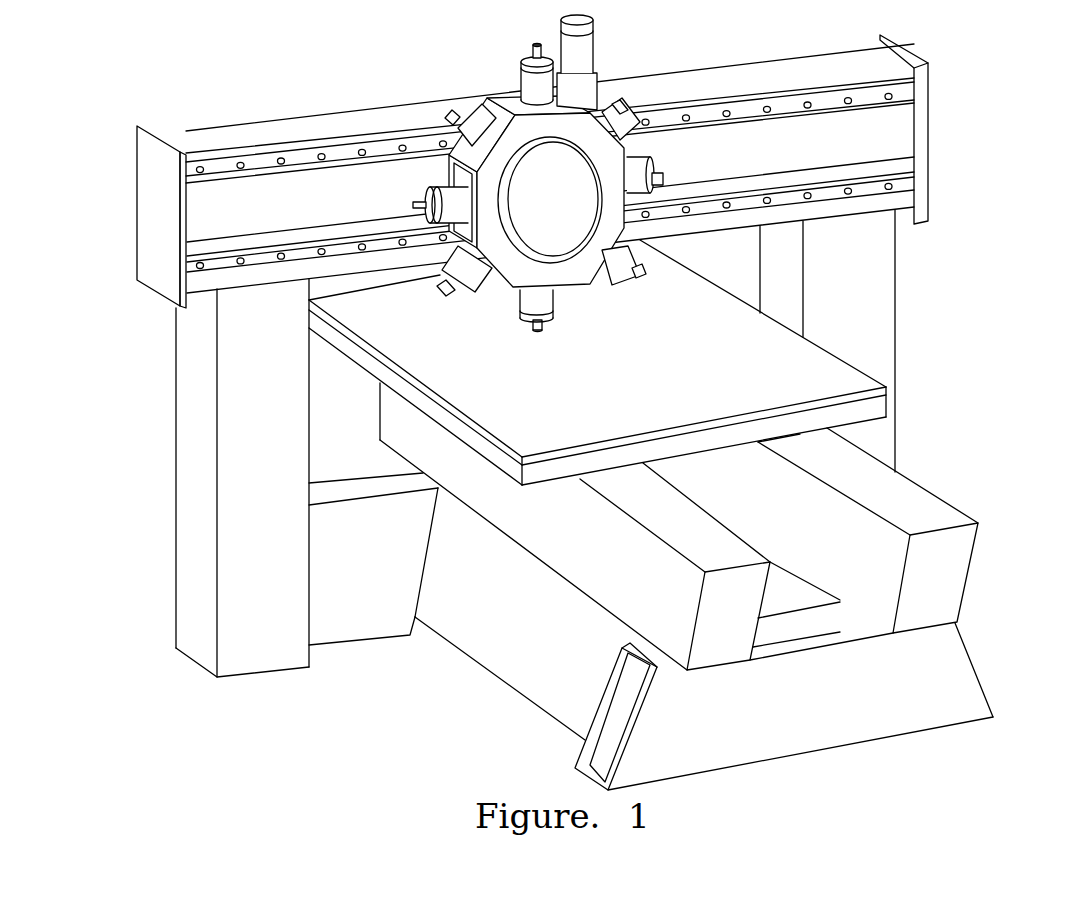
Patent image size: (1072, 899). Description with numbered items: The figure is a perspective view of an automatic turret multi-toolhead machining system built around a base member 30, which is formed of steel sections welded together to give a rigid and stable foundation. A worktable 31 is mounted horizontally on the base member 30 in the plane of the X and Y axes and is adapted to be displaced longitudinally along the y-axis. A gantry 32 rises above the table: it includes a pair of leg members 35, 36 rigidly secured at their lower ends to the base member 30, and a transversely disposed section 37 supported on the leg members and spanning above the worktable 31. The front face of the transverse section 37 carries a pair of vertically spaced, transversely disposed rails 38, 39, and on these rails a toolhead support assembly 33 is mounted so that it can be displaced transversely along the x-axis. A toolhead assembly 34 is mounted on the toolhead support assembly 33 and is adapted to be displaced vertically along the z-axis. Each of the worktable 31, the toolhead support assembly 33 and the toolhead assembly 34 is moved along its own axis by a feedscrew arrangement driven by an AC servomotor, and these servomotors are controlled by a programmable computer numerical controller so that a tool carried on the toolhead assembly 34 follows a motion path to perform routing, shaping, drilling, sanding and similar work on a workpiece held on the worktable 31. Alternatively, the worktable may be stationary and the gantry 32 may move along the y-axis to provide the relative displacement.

The base member 30 is at (960, 566).
The worktable 31 is at (853, 380).
The gantry 32 is at (145, 227).
The toolhead support assembly 33 is at (468, 92).
The toolhead assembly 34 is at (620, 171).
The leg member 35 is at (192, 380).
The leg member 36 is at (888, 267).
The transversely disposed section 37 is at (920, 213).
The rail 38 is at (302, 253).
The rail 39 is at (393, 153).